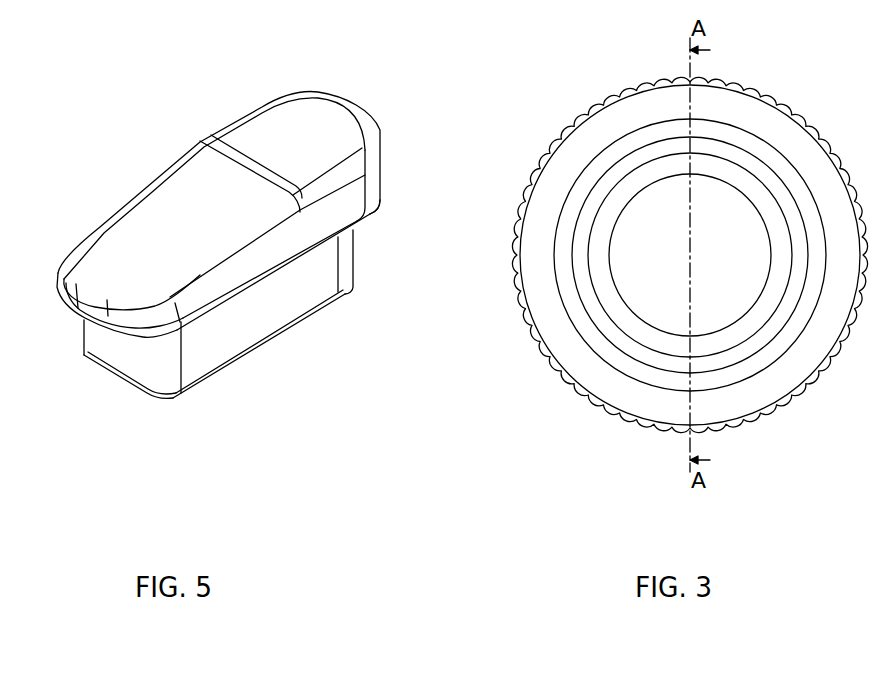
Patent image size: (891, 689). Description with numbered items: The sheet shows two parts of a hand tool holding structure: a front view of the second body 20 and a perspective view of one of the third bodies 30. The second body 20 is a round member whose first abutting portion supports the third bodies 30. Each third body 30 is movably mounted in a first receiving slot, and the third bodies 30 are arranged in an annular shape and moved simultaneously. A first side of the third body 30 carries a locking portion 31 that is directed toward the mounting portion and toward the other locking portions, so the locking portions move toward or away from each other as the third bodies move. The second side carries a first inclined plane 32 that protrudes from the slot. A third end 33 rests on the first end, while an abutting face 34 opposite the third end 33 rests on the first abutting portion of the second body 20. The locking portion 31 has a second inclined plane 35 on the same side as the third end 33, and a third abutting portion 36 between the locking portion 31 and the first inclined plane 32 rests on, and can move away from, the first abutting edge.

In FIG. 3, the second body 20 is at (562, 157).
In FIG. 5, the third body 30 is at (283, 313).
In FIG. 5, the locking portion 31 is at (240, 360).
In FIG. 5, the first inclined plane 32 is at (162, 192).
In FIG. 5, the third end 33 is at (102, 343).
In FIG. 5, the abutting face 34 is at (383, 177).
In FIG. 5, the second inclined plane 35 is at (117, 382).
In FIG. 5, the third abutting portion 36 is at (313, 253).